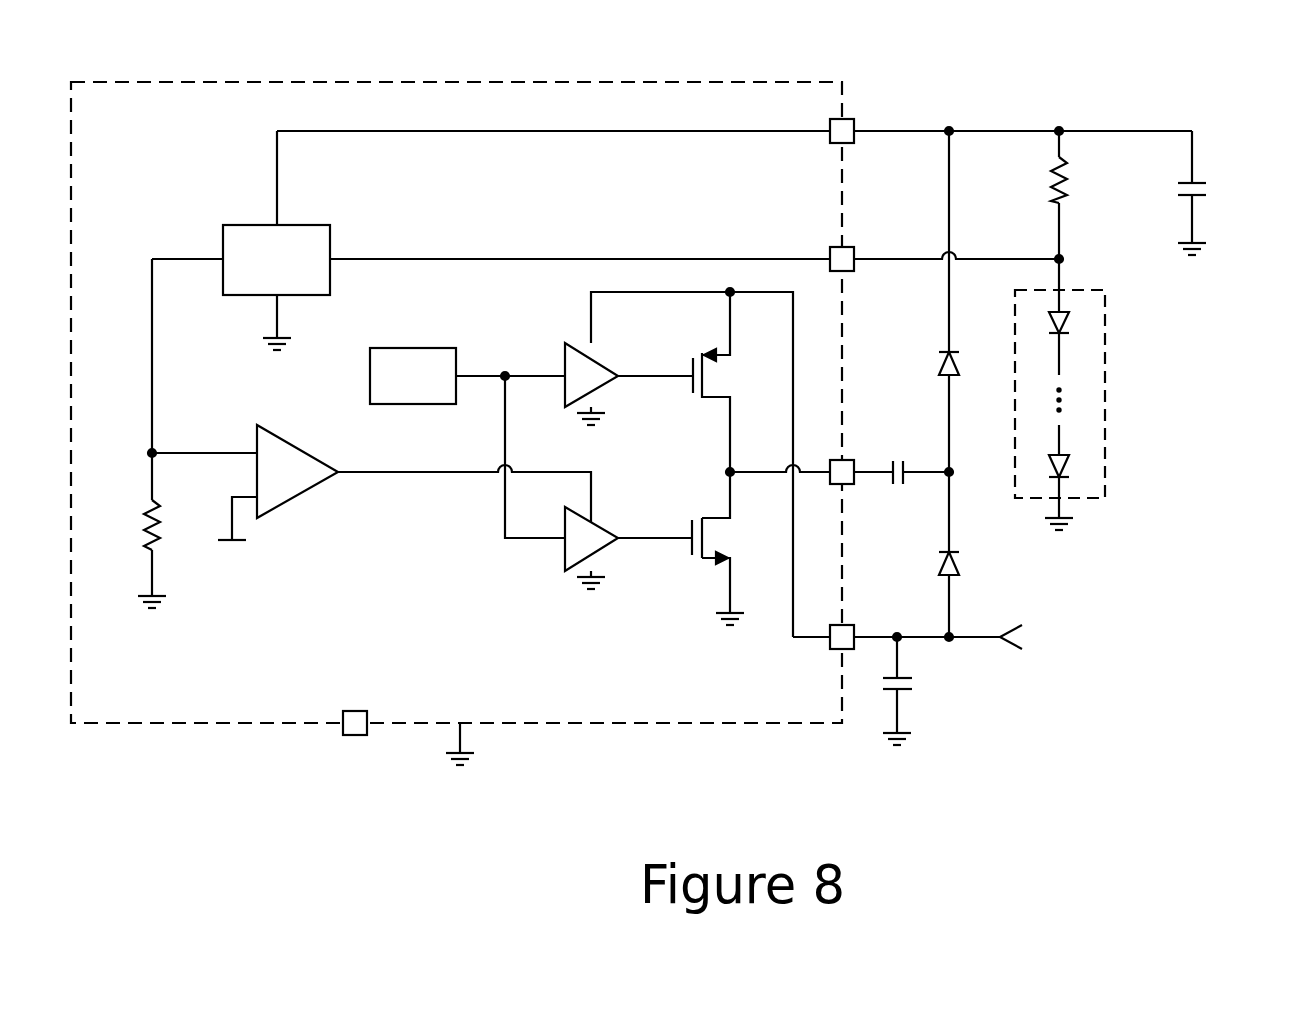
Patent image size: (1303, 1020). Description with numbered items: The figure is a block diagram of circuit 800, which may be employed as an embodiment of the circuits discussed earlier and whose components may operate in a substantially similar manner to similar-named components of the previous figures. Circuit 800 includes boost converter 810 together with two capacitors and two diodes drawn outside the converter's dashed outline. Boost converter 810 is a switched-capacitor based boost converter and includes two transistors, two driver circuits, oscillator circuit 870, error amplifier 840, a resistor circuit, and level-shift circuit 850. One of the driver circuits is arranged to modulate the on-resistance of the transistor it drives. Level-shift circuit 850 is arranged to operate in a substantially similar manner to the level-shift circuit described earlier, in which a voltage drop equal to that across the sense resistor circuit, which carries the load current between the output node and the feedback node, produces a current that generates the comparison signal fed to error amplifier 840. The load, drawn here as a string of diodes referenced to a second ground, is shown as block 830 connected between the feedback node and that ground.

The circuit 800 is at (665, 23).
The boost converter 810 is at (559, 114).
The LED string 830 is at (1105, 440).
The error amplifier 840 is at (305, 500).
The level-shift circuit 850 is at (302, 225).
The oscillator circuit 870 is at (398, 348).